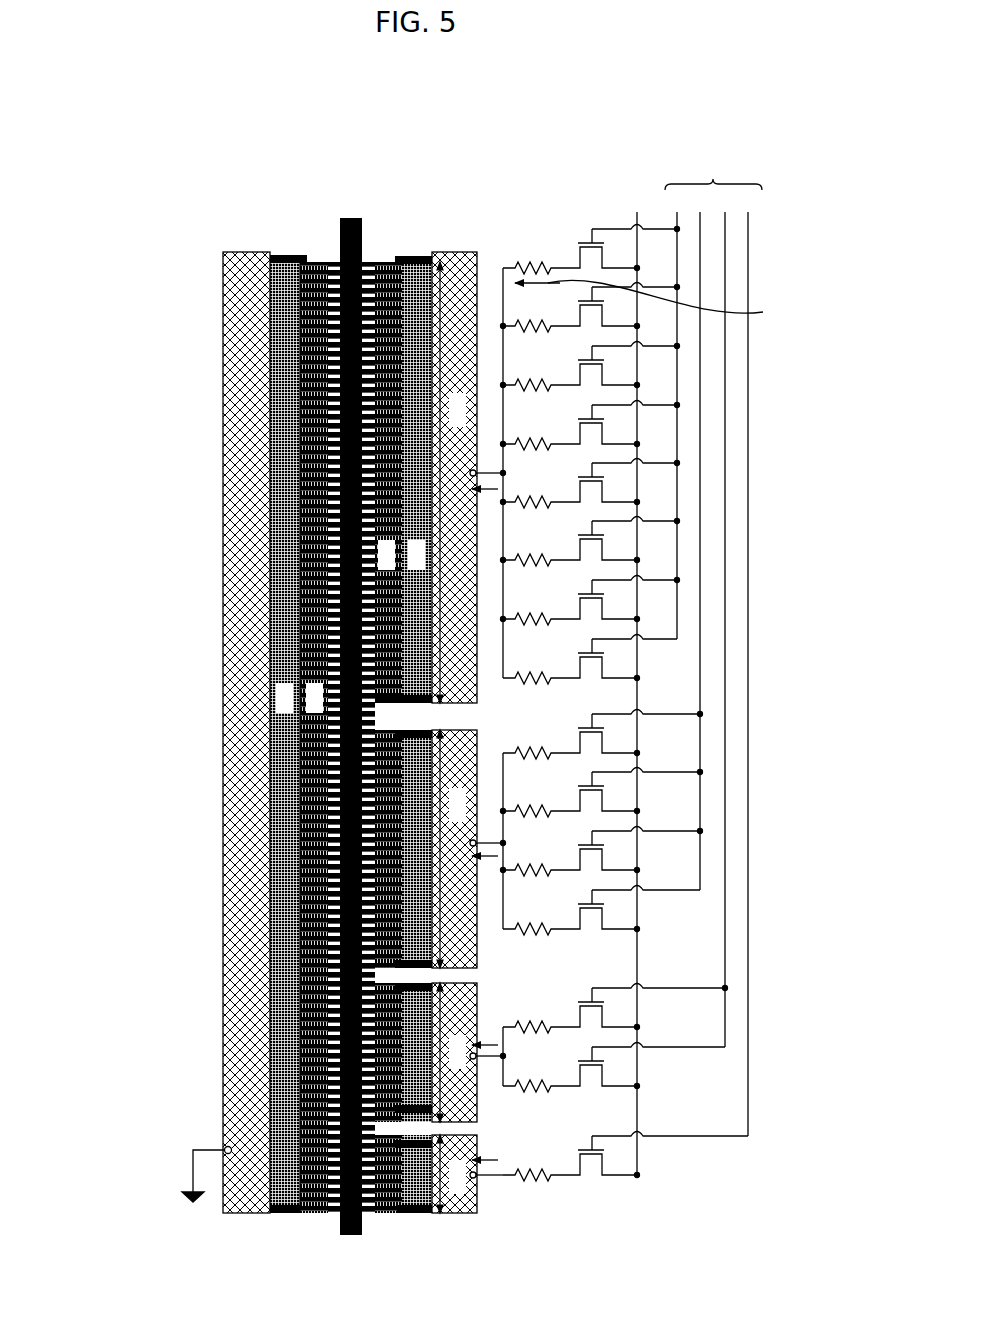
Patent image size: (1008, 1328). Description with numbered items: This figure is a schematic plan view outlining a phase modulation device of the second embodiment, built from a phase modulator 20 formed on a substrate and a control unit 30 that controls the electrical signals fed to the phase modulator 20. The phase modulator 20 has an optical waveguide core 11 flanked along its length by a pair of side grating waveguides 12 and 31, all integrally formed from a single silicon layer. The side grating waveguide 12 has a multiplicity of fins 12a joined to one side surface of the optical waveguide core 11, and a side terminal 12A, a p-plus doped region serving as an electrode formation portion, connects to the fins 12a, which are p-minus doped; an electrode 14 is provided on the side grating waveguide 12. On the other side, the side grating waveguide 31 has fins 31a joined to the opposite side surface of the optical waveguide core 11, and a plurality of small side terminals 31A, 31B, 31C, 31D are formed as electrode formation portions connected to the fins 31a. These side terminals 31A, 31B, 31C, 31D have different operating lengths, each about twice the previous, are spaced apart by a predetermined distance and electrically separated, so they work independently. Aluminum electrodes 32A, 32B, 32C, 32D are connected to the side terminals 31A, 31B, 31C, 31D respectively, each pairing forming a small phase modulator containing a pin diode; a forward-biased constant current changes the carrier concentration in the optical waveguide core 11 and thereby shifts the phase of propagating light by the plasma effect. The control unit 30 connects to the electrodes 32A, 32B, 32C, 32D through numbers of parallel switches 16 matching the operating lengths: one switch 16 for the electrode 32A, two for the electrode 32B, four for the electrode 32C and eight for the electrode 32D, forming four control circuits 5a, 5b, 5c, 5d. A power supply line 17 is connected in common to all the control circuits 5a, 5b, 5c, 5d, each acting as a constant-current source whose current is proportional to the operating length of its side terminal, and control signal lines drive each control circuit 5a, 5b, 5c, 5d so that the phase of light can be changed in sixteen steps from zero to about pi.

The phase modulator 20 is at (100, 192).
The electrode 14 is at (249, 253).
The side grating waveguide 12 is at (290, 377).
The side terminal 12A is at (290, 254).
The fins 12a is at (336, 262).
The optical waveguide core 11 is at (348, 291).
The fins 31a is at (370, 262).
The side grating waveguide 31 is at (152, 632).
The side terminal 31A is at (415, 1141).
The side terminal 31B is at (413, 991).
The side terminal 31C is at (418, 733).
The side terminal 31D is at (418, 697).
The electrode 32A is at (465, 1193).
The electrode 32B is at (465, 1100).
The electrode 32C is at (465, 900).
The electrode 32D is at (462, 352).
The control unit 30 is at (650, 211).
The switch 16 is at (637, 261).
The power supply line 17 is at (637, 1160).
The control circuit 5a is at (547, 1154).
The control circuit 5b is at (547, 1007).
The control circuit 5c is at (547, 737).
The control circuit 5d is at (547, 251).